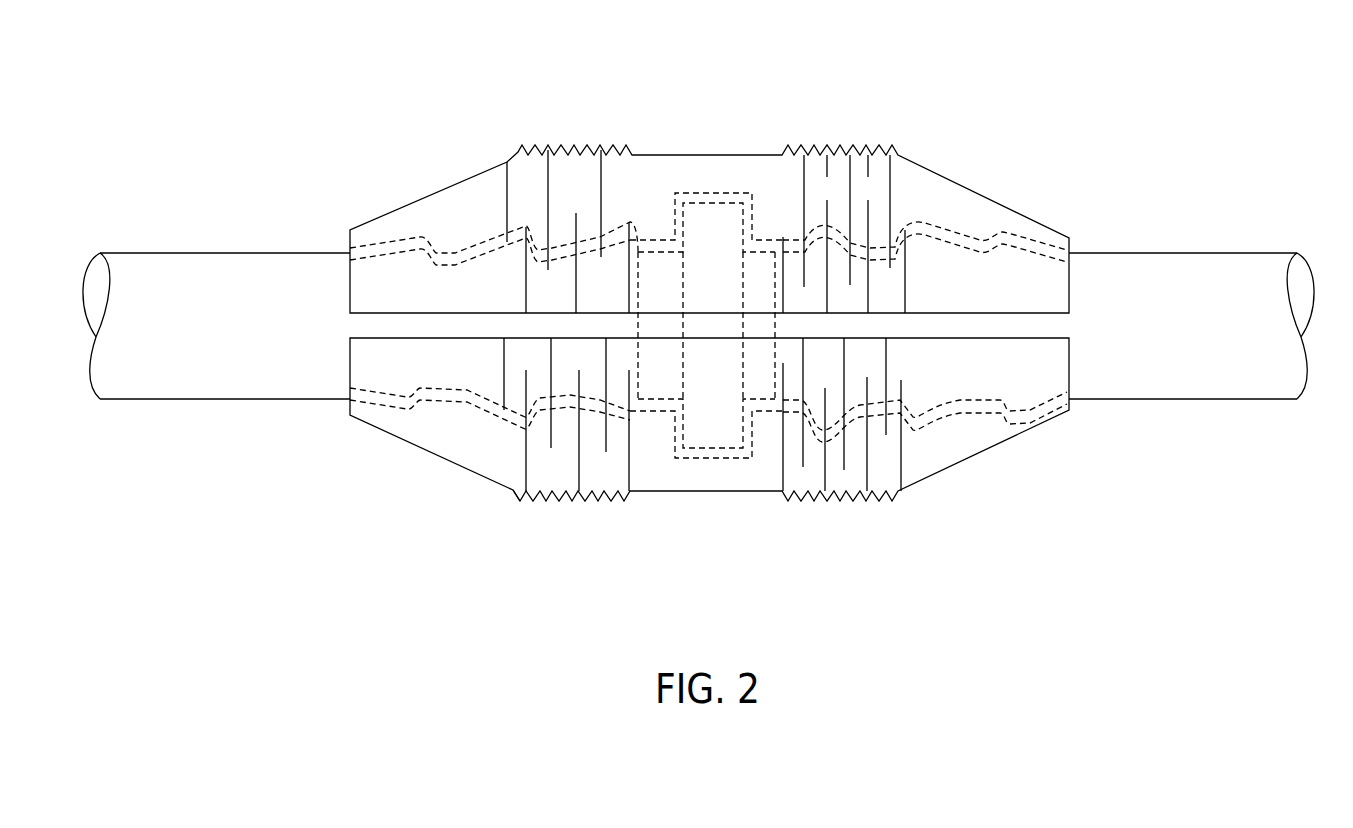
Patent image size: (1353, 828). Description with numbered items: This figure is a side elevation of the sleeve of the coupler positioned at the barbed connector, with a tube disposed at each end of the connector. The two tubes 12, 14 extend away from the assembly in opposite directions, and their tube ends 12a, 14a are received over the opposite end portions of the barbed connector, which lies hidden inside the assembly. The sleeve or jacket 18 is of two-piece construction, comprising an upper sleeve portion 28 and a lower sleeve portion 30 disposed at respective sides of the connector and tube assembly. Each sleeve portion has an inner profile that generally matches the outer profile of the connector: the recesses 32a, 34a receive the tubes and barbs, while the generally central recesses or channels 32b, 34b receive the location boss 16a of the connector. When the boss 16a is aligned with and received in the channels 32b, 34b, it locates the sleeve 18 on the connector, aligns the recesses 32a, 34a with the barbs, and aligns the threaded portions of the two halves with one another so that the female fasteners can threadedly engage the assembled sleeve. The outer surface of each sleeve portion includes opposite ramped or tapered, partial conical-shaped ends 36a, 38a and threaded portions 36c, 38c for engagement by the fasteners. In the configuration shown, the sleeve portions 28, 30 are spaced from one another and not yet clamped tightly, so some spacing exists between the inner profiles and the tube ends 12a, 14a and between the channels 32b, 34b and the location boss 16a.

The tube 12 is at (130, 226).
The tube 14 is at (1250, 430).
The sleeve or jacket 18 is at (1040, 172).
The sleeve portion 28 is at (520, 128).
The sleeve portion 30 is at (688, 528).
The ramped or tapered end 36a is at (436, 192).
The threaded portion 36c is at (855, 148).
The ramped or tapered end 38a is at (966, 460).
The threaded portion 38c is at (565, 498).
The recess 32a is at (928, 220).
The central recess or channel 32b is at (700, 233).
The recess 34a is at (407, 417).
The central recess or channel 34b is at (730, 458).
The location boss 16a is at (700, 233).
The tube end 12a is at (600, 327).
The tube end 14a is at (783, 328).